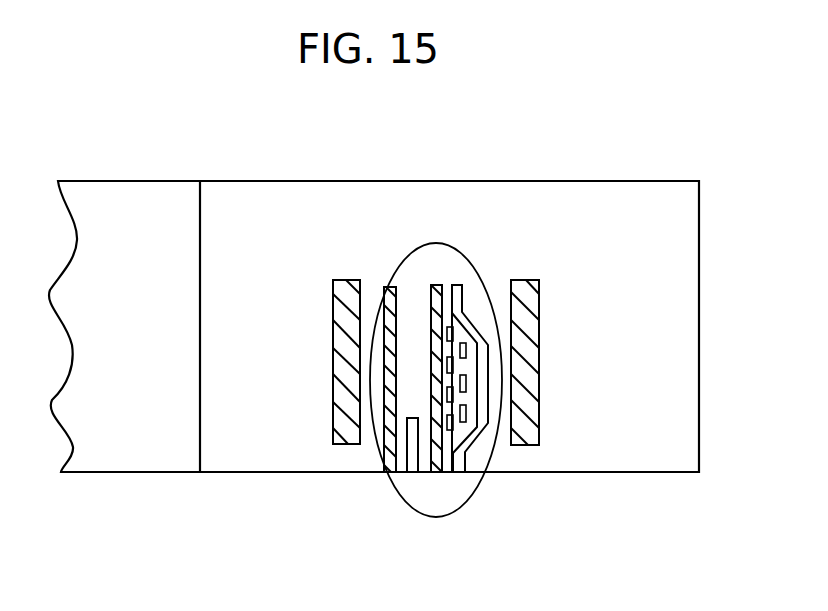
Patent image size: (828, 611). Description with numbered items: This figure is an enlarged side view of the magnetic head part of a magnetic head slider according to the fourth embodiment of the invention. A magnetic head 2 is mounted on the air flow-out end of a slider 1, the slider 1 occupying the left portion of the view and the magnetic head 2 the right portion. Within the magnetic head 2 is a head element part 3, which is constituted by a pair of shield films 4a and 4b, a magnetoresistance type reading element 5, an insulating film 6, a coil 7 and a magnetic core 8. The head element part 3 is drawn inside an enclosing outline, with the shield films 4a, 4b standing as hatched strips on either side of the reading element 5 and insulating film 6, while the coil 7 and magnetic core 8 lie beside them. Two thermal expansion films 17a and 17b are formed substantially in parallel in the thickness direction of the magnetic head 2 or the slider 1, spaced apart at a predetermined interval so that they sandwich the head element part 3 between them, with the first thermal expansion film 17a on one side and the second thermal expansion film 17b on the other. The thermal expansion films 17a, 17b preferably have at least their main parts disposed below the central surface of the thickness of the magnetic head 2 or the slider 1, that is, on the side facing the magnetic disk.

The slider 1 is at (105, 225).
The magnetic head 2 is at (268, 212).
The head element part 3 is at (438, 243).
The shield film 4a is at (384, 287).
The shield film 4b is at (432, 287).
The magnetoresistance type reading element 5 is at (413, 460).
The insulating film 6 is at (427, 455).
The coil 7 is at (447, 327).
The magnetic core 8 is at (464, 322).
The thermal expansion film 17a is at (340, 353).
The thermal expansion film 17b is at (530, 352).